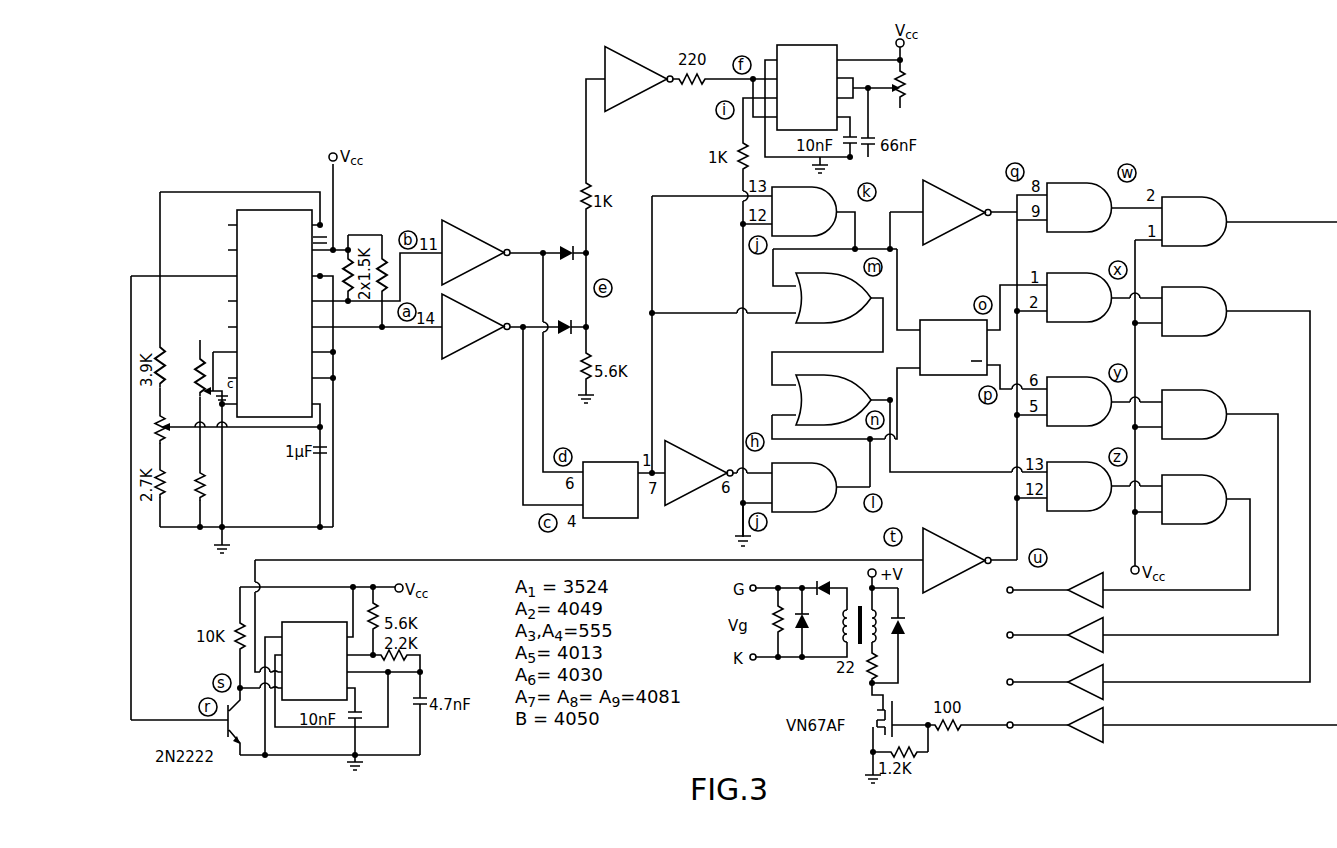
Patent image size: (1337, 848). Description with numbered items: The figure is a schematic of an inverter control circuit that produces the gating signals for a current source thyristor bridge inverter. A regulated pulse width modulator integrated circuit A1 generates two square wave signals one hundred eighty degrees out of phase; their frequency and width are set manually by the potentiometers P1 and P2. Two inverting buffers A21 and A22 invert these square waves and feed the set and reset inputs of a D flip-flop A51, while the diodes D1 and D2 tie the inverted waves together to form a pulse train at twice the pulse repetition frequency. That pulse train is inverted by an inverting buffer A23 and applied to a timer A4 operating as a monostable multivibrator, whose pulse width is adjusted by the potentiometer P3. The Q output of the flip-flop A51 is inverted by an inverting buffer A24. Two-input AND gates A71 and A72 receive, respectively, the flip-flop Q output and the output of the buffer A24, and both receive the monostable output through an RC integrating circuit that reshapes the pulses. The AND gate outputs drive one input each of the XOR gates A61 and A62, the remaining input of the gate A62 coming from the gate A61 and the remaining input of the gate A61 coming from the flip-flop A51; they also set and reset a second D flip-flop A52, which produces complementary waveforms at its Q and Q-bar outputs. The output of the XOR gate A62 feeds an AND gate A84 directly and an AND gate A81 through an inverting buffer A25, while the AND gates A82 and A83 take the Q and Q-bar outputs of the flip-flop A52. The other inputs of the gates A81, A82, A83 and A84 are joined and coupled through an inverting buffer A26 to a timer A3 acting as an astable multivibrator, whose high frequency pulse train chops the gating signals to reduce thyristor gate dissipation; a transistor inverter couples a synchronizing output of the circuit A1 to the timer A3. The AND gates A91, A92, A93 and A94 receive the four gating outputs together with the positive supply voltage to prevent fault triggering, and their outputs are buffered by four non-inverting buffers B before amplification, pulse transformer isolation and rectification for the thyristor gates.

The regulated pulse width modulator integrated circuit A1 is at (270, 313).
The inverting buffer A21 is at (485, 252).
The inverting buffer A22 is at (485, 326).
The inverting buffer A23 is at (630, 79).
The inverting buffer A24 is at (699, 473).
The inverting buffer A25 is at (957, 212).
The inverting buffer A26 is at (957, 560).
The timer A3 is at (314, 661).
The timer A4 is at (807, 87).
The D flip-flop A51 is at (610, 490).
The second D flip-flop A52 is at (951, 347).
The XOR gate A61 is at (834, 296).
The XOR gate A62 is at (836, 396).
The two-input AND gate A71 is at (815, 211).
The two-input AND gate A72 is at (803, 481).
The two-input AND gate A81 is at (1089, 207).
The two-input AND gate A82 is at (1087, 297).
The two-input AND gate A83 is at (1087, 401).
The two-input AND gate A84 is at (1091, 486).
The two-input AND gate A91 is at (1200, 221).
The two-input AND gate A92 is at (1195, 308).
The two-input AND gate A93 is at (1197, 411).
The two-input AND gate A94 is at (1190, 496).
The non-inverting buffer B is at (1172, 655).
The diode D1 is at (548, 317).
The diode D2 is at (548, 244).
The potentiometer P1 is at (207, 433).
The potentiometer P2 is at (229, 431).
The potentiometer P3 is at (916, 96).